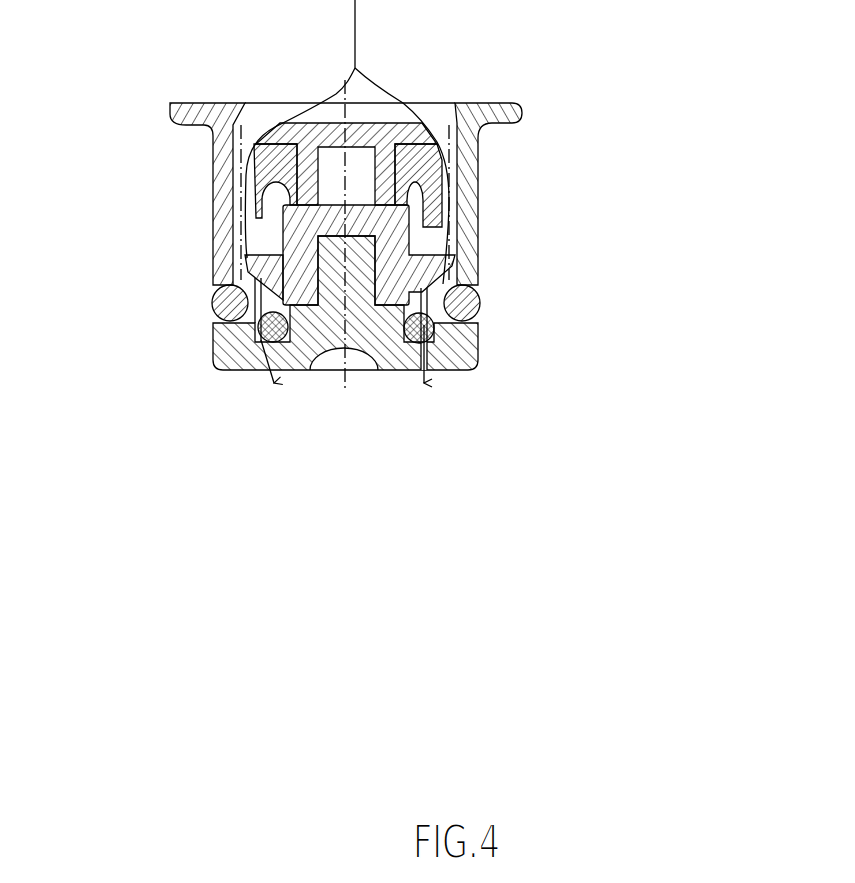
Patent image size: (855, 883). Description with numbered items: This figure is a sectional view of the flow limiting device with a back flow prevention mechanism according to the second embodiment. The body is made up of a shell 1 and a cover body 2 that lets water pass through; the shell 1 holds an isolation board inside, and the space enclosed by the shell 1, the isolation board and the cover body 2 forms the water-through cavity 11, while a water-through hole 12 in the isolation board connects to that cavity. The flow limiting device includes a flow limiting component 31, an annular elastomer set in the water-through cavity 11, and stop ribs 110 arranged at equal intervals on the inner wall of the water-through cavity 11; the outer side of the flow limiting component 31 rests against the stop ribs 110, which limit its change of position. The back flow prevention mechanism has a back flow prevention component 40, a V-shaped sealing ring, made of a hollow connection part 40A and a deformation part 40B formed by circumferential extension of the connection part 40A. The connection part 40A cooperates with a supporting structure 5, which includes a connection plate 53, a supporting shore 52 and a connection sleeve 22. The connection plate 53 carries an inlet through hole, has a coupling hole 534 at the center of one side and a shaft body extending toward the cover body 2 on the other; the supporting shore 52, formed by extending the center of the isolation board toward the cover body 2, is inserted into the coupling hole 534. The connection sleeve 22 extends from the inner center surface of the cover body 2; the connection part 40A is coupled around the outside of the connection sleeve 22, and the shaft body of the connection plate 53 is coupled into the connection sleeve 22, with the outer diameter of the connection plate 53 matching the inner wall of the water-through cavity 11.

The shell 1 is at (284, 319).
The water-through cavity 11 is at (215, 200).
The stop ribs 110 is at (213, 300).
The water-through hole 12 is at (252, 340).
The cover body 2 is at (247, 142).
The connection sleeve 22 is at (247, 160).
The flow limiting component 31 is at (260, 328).
The back flow prevention component 40 is at (511, 166).
The connection part 40A is at (440, 168).
The deformation part 40B is at (443, 200).
The supporting structure 5 is at (343, 324).
The supporting shore 52 is at (450, 300).
The connection plate 53 is at (398, 265).
The coupling hole 534 is at (285, 240).